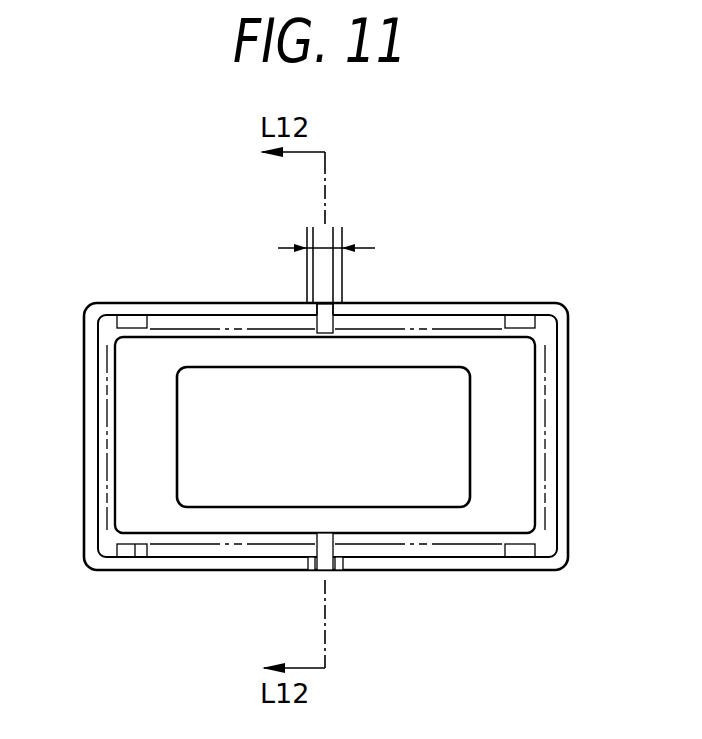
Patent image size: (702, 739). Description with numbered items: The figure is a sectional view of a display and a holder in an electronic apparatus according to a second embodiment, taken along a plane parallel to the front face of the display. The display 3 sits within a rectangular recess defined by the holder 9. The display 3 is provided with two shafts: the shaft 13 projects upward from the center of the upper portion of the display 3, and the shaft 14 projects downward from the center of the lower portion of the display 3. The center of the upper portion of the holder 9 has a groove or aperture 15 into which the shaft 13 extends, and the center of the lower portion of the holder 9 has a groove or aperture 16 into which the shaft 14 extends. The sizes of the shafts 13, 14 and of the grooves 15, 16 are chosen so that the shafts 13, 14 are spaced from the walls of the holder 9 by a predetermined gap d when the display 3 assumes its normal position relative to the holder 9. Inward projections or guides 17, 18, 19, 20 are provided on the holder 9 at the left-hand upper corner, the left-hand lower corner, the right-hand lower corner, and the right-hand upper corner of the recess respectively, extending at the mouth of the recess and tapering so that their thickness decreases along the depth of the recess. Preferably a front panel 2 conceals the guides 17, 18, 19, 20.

The front panel 2 is at (547, 440).
The display 3 is at (152, 463).
The holder 9 is at (82, 360).
The shaft 13 is at (330, 330).
The shaft 14 is at (347, 545).
The groove 15 is at (312, 308).
The groove 16 is at (298, 575).
The guide 17 is at (132, 320).
The guide 18 is at (133, 557).
The guide 19 is at (517, 552).
The guide 20 is at (518, 320).
The gap d is at (315, 232).